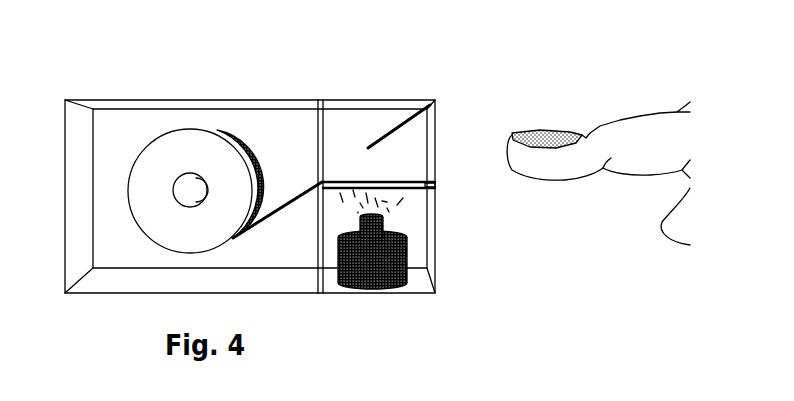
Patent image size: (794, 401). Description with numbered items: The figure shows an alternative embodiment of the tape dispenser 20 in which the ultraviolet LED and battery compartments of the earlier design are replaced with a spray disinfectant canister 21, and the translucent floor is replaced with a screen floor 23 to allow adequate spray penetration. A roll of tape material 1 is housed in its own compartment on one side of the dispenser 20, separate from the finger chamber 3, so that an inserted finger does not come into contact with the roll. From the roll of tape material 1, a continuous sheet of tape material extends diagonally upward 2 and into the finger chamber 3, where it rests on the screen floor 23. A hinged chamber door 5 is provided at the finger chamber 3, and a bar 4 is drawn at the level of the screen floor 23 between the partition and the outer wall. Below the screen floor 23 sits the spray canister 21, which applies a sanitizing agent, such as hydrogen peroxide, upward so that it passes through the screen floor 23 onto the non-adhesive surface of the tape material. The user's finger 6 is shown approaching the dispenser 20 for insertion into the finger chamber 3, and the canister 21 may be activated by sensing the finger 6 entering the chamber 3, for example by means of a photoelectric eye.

The dispenser 20 is at (90, 75).
The roll of tape material 1 is at (172, 147).
The tape material extending diagonally upward 2 is at (292, 192).
The finger chamber 3 is at (335, 123).
The cutting bar 4 is at (347, 178).
The hinged chamber door 5 is at (403, 122).
The screen floor 23 is at (435, 188).
The spray canister 21 is at (387, 270).
The finger 6 is at (567, 168).